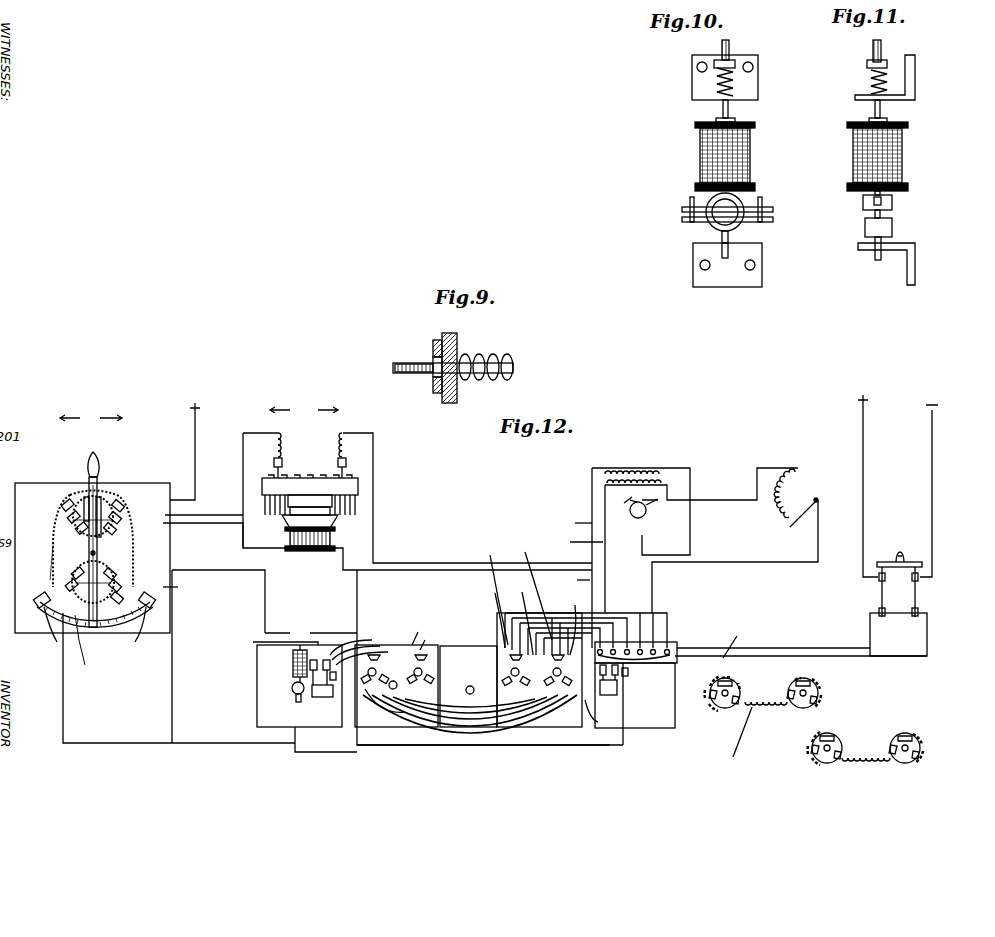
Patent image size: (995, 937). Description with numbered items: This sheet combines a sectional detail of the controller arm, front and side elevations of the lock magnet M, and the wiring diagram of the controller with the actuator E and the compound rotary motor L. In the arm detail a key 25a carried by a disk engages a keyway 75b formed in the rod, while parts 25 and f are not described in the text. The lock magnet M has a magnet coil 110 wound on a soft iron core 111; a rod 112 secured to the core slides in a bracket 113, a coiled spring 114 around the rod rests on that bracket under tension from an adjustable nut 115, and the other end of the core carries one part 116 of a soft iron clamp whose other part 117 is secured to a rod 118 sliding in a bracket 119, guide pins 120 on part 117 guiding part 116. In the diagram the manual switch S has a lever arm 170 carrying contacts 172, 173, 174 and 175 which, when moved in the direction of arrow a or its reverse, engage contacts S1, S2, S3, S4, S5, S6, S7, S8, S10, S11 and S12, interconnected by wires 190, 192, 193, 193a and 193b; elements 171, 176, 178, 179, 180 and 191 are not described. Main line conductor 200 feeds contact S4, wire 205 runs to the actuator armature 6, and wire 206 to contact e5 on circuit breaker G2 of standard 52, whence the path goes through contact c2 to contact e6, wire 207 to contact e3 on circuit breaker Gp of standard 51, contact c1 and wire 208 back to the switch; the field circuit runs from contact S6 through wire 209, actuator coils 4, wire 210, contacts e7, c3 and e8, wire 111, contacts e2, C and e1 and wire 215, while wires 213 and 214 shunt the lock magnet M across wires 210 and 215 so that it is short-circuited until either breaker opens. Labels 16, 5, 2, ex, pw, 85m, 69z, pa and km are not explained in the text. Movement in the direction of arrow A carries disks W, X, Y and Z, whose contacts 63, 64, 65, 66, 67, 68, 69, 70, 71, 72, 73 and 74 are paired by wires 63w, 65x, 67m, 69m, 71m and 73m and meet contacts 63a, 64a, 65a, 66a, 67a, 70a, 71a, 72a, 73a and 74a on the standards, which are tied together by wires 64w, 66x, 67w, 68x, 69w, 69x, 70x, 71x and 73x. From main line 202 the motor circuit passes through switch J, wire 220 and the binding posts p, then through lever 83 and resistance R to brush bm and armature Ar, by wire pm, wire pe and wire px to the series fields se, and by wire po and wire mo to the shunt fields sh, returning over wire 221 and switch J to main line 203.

In FIG. 10, the magnet coil 110 is at (751, 155).
In FIG. 11, the magnet coil 110 is at (853, 158).
In FIG. 10, the soft iron core 111 is at (737, 118).
In FIG. 11, the soft iron core 111 is at (889, 118).
In FIG. 12, the soft iron core 111 is at (606, 748).
In FIG. 10, the rod 112 is at (720, 110).
In FIG. 11, the rod 112 is at (874, 108).
In FIG. 10, the bracket 113 is at (692, 90).
In FIG. 11, the bracket 113 is at (916, 90).
In FIG. 10, the coiled spring 114 is at (734, 80).
In FIG. 11, the coiled spring 114 is at (869, 82).
In FIG. 10, the nut 115 is at (735, 58).
In FIG. 11, the nut 115 is at (866, 64).
In FIG. 10, the clamp part 116 is at (774, 204).
In FIG. 11, the clamp part 116 is at (893, 205).
In FIG. 10, the clamp part 117 is at (774, 220).
In FIG. 11, the clamp part 117 is at (893, 222).
In FIG. 10, the rod 118 is at (720, 240).
In FIG. 11, the rod 118 is at (889, 243).
In FIG. 10, the bracket 119 is at (735, 278).
In FIG. 10, the guide pins 120 is at (762, 198).
In FIG. 10, the lock magnet M is at (700, 143).
In FIG. 12, the lock magnet M is at (291, 672).
In FIG. 9, the shaft 25 is at (430, 377).
In FIG. 9, the key 25a is at (459, 358).
In FIG. 9, the keyway 75b is at (497, 357).
In FIG. 9, the part f is at (457, 416).
In FIG. 12, the manual switch S is at (50, 478).
In FIG. 12, the wire 190 is at (101, 480).
In FIG. 12, the lever arm 170 is at (93, 539).
In FIG. 12, the pivot 171 is at (106, 526).
In FIG. 12, the contact 172 is at (82, 508).
In FIG. 12, the contact 173 is at (114, 501).
In FIG. 12, the upper contact ring 191 is at (90, 520).
In FIG. 12, the wire 192 is at (96, 572).
In FIG. 12, the wire 193 is at (133, 552).
In FIG. 12, the wire 193a is at (58, 549).
In FIG. 12, the wire 193b is at (142, 638).
In FIG. 12, the switch contact S1 is at (60, 503).
In FIG. 12, the switch contact S2 is at (66, 516).
In FIG. 12, the switch contact S3 is at (74, 527).
In FIG. 12, the switch contact S4 is at (125, 503).
In FIG. 12, the switch contact S5 is at (122, 516).
In FIG. 12, the switch contact S6 is at (117, 528).
In FIG. 12, the switch contact S7 is at (73, 568).
In FIG. 12, the switch contact S8 is at (62, 585).
In FIG. 12, the switch contact S10 is at (117, 567).
In FIG. 12, the switch contact S11 is at (122, 583).
In FIG. 12, the switch contact S12 is at (124, 596).
In FIG. 12, the contact 174 is at (78, 628).
In FIG. 12, the contact 175 is at (105, 627).
In FIG. 12, the conductor 176 is at (125, 622).
In FIG. 12, the contact rack 178 is at (152, 612).
In FIG. 12, the end contact 179 is at (45, 612).
In FIG. 12, the end contact 180 is at (147, 612).
In FIG. 12, the arrow a is at (91, 410).
In FIG. 12, the main line conductor 200 is at (199, 451).
In FIG. 12, the main line 202 is at (862, 430).
In FIG. 12, the main line 203 is at (932, 432).
In FIG. 12, the wire 205 is at (213, 514).
In FIG. 12, the wire 206 is at (380, 437).
In FIG. 12, the wire 207 is at (477, 695).
In FIG. 12, the wire 208 is at (160, 690).
In FIG. 12, the wire 209 is at (225, 538).
In FIG. 12, the wire 210 is at (714, 641).
In FIG. 12, the wire 213 is at (328, 633).
In FIG. 12, the wire 214 is at (269, 642).
In FIG. 12, the wire 215 is at (218, 656).
In FIG. 12, the wire 220 is at (824, 648).
In FIG. 12, the wire 221 is at (896, 658).
In FIG. 12, the actuator E is at (417, 498).
In FIG. 12, the arrow A is at (299, 404).
In FIG. 12, the coil 16' 16 is at (338, 466).
In FIG. 12, the armature 6 is at (357, 503).
In FIG. 12, the armature 5 is at (292, 510).
In FIG. 12, the actuator coils 4 is at (335, 521).
In FIG. 12, the magnet coil 2 is at (335, 536).
In FIG. 12, the contact C is at (291, 690).
In FIG. 12, the circuit breaker Gp is at (322, 698).
In FIG. 12, the standard 51 is at (285, 730).
In FIG. 12, the contact c1 is at (336, 676).
In FIG. 12, the conductor contact 67a is at (375, 664).
In FIG. 12, the conductor contact 64a is at (422, 664).
In FIG. 12, the conductor contact 68 is at (842, 702).
In FIG. 12, the contact e1 is at (353, 634).
In FIG. 12, the contact e2 is at (361, 639).
In FIG. 12, the contact e3 is at (365, 646).
In FIG. 12, the conductor ex is at (395, 650).
In FIG. 12, the conductor contact 66a is at (426, 630).
In FIG. 12, the conductor contact 65a is at (430, 639).
In FIG. 12, the wire 64w is at (470, 697).
In FIG. 12, the conductor contact 63a is at (438, 660).
In FIG. 12, the conductor contact 70a is at (508, 660).
In FIG. 12, the wire 69x is at (500, 680).
In FIG. 12, the conductor contact 71a is at (551, 676).
In FIG. 12, the conductor contact 74a is at (564, 692).
In FIG. 12, the binding posts p is at (514, 650).
In FIG. 12, the conductor 69z is at (494, 614).
In FIG. 12, the wire 71x is at (522, 617).
In FIG. 12, the conductor contact 73a is at (574, 624).
In FIG. 12, the wire pe is at (490, 595).
In FIG. 12, the conductor pa is at (529, 590).
In FIG. 12, the wire 68x is at (380, 730).
In FIG. 12, the wire 66x is at (420, 730).
In FIG. 12, the wire 67w is at (430, 735).
In FIG. 12, the wire 69w is at (463, 735).
In FIG. 12, the wire 70x is at (487, 740).
In FIG. 12, the conductor contact 72a is at (535, 735).
In FIG. 12, the wire 73x is at (505, 745).
In FIG. 12, the standard 52 is at (651, 730).
In FIG. 12, the circuit breaker G2 is at (610, 689).
In FIG. 12, the contact e5 is at (600, 672).
In FIG. 12, the contact e6 is at (597, 712).
In FIG. 12, the contact e7 is at (629, 670).
In FIG. 12, the contact e8 is at (625, 686).
In FIG. 12, the contact c2 is at (603, 736).
In FIG. 12, the contact c3 is at (630, 680).
In FIG. 12, the wire po is at (672, 660).
In FIG. 12, the compound rotary motor L is at (682, 465).
In FIG. 12, the series fields se is at (641, 468).
In FIG. 12, the shunt fields sh is at (658, 478).
In FIG. 12, the armature Ar is at (642, 515).
In FIG. 12, the brush bm is at (645, 506).
In FIG. 12, the wire pm is at (643, 540).
In FIG. 12, the wire px is at (690, 543).
In FIG. 12, the wire mo is at (568, 523).
In FIG. 12, the conductor km is at (574, 541).
In FIG. 12, the resistance R is at (777, 511).
In FIG. 12, the conductor contact 70 is at (908, 733).
In FIG. 12, the lever 83 is at (810, 522).
In FIG. 12, the conductor 85m is at (768, 562).
In FIG. 12, the wire bundle pw is at (586, 630).
In FIG. 12, the switch J is at (925, 593).
In FIG. 12, the wire 63w is at (746, 640).
In FIG. 12, the disk W is at (724, 710).
In FIG. 12, the disk X is at (800, 710).
In FIG. 12, the disk Y is at (827, 765).
In FIG. 12, the disk Z is at (905, 765).
In FIG. 12, the conductor contact 63 is at (712, 700).
In FIG. 12, the conductor contact 64 is at (735, 680).
In FIG. 12, the conductor contact 65 is at (745, 690).
In FIG. 12, the wire 65x is at (735, 738).
In FIG. 12, the conductor contact 66 is at (790, 705).
In FIG. 12, the conductor contact 67 is at (803, 680).
In FIG. 12, the wire 67m is at (820, 688).
In FIG. 12, the conductor contact 69 is at (918, 757).
In FIG. 12, the wire 69m is at (920, 742).
In FIG. 12, the conductor contact 71 is at (892, 752).
In FIG. 12, the wire 71m is at (876, 762).
In FIG. 12, the conductor contact 72 is at (837, 762).
In FIG. 12, the conductor contact 73 is at (833, 734).
In FIG. 12, the wire 73m is at (812, 750).
In FIG. 12, the conductor contact 74 is at (819, 762).